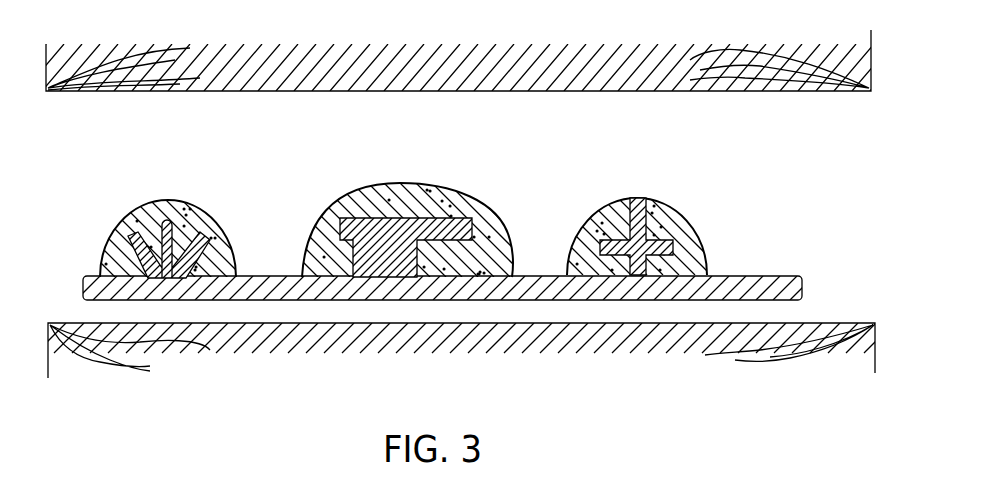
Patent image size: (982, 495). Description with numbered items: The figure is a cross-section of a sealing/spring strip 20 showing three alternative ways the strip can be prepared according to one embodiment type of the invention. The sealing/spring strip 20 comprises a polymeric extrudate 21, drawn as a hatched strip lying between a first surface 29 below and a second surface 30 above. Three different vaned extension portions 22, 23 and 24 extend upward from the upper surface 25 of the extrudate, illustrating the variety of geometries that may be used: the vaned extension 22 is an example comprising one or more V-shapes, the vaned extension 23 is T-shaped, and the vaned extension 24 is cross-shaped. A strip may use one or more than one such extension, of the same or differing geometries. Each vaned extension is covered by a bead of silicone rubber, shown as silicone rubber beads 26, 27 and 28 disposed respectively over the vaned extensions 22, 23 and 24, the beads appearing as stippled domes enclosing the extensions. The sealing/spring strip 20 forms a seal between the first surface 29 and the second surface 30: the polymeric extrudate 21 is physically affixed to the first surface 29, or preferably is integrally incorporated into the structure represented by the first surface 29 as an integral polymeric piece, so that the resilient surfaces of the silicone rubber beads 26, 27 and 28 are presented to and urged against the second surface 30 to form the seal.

The sealing/spring strip 20 is at (703, 164).
The polymeric extrudate 21 is at (745, 268).
The vaned extension portion 22 is at (166, 276).
The vaned extension portion 23 is at (471, 222).
The vaned extension portion 24 is at (633, 198).
The upper surface 25 is at (168, 249).
The silicone rubber bead 26 is at (168, 200).
The silicone rubber bead 27 is at (412, 183).
The silicone rubber bead 28 is at (691, 222).
The first surface 29 is at (828, 322).
The second surface 30 is at (778, 91).